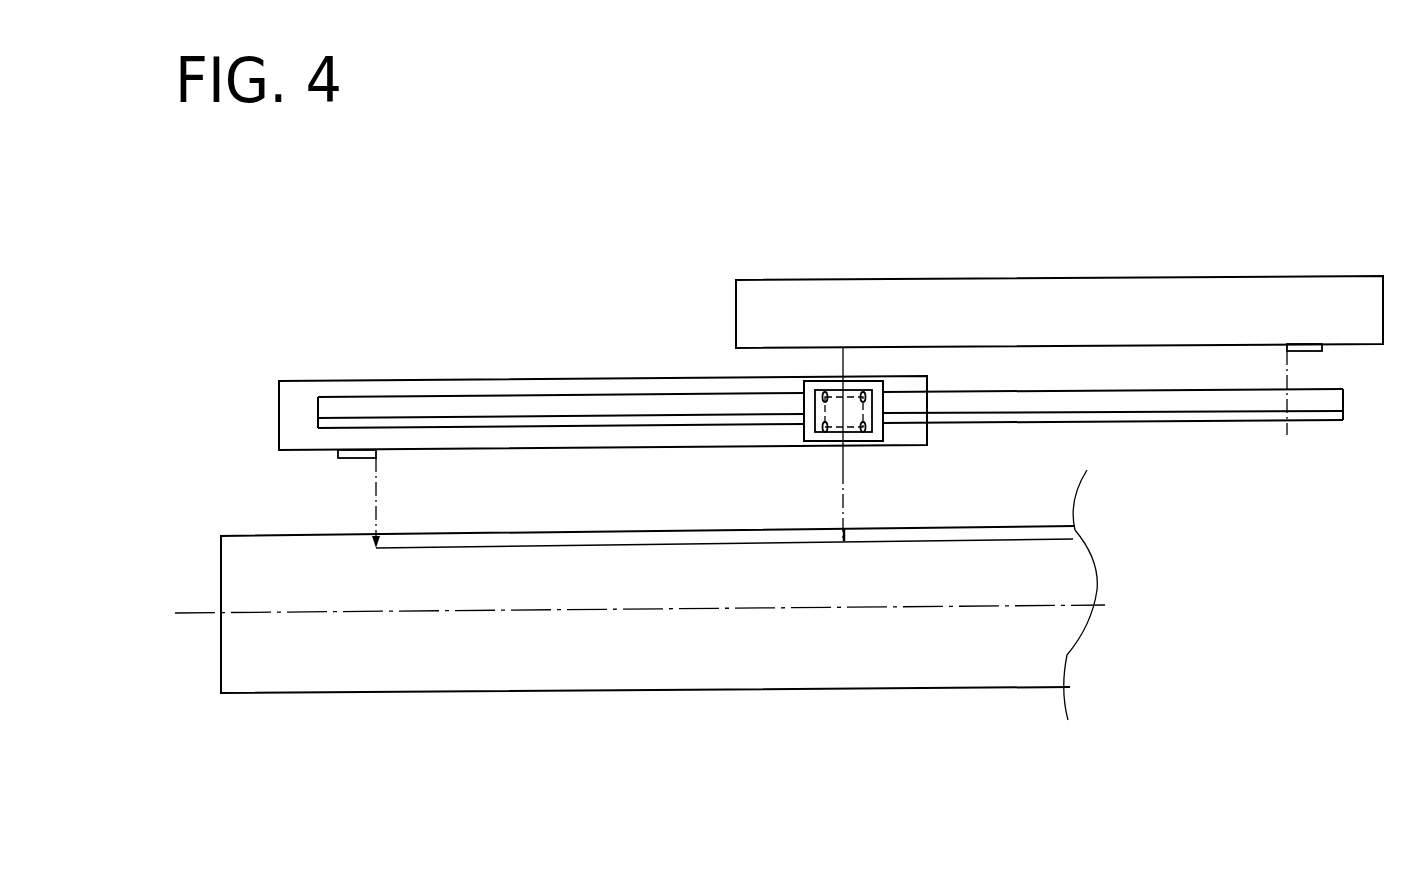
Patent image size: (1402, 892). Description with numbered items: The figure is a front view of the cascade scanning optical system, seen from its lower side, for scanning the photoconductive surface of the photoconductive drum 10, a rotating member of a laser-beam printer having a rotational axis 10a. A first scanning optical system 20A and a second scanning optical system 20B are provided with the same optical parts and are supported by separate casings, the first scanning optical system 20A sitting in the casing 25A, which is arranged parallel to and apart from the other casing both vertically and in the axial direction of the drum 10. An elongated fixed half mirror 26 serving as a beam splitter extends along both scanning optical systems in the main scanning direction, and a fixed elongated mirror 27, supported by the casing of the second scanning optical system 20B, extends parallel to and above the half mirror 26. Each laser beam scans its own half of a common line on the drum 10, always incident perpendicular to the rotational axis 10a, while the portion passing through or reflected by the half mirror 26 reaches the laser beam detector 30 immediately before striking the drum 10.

The photoconductive drum 10 is at (535, 672).
The rotational axis 10a is at (196, 615).
The first scanning optical system 20A is at (596, 372).
The second scanning optical system 20B is at (1014, 266).
The casing 25A is at (303, 405).
The half mirror 26 is at (516, 408).
The mirror 27 is at (883, 297).
The laser beam detector 30 is at (878, 442).